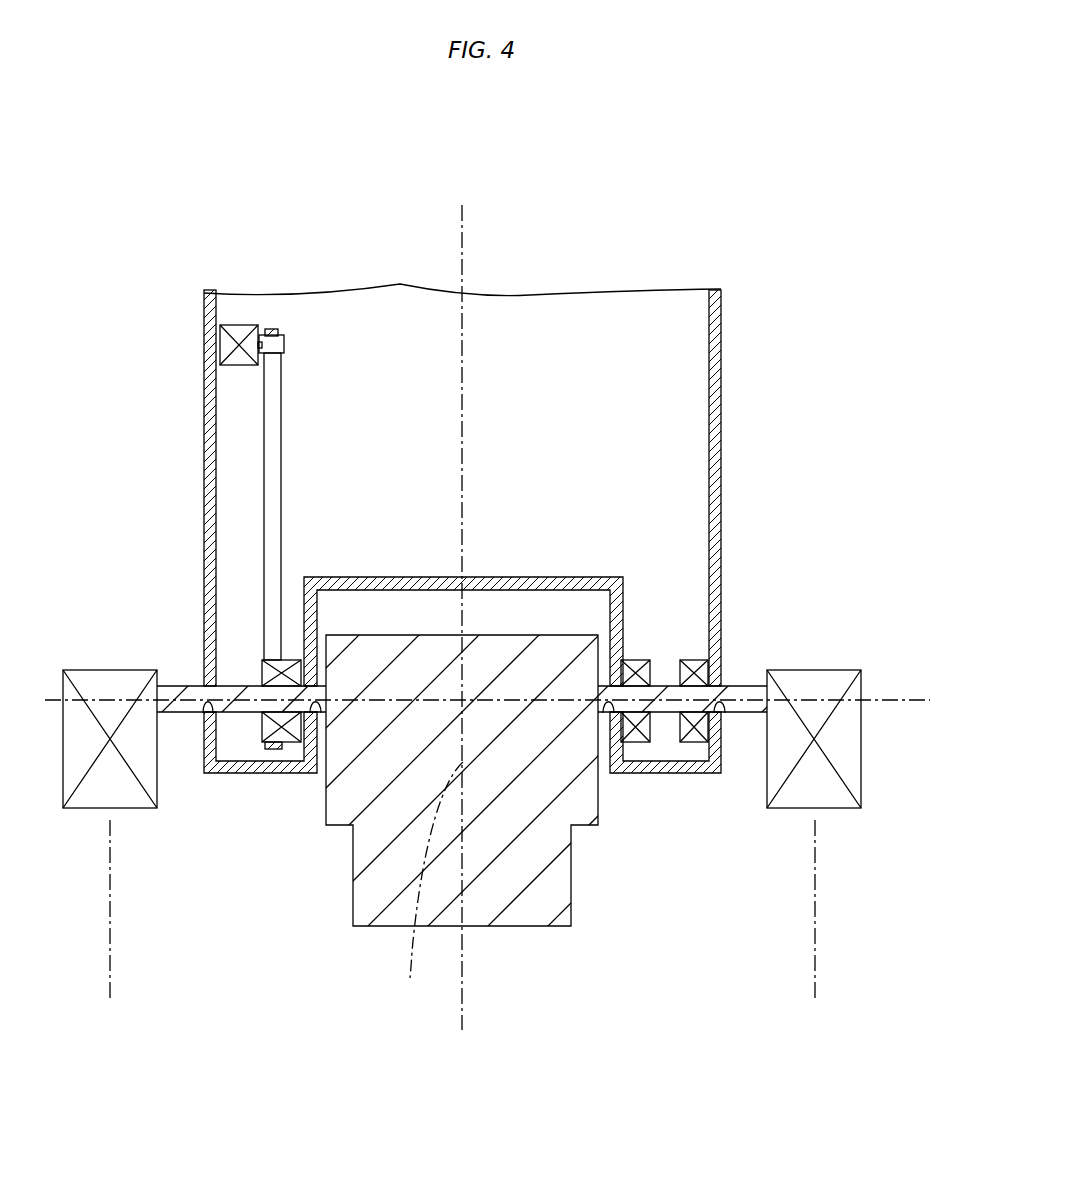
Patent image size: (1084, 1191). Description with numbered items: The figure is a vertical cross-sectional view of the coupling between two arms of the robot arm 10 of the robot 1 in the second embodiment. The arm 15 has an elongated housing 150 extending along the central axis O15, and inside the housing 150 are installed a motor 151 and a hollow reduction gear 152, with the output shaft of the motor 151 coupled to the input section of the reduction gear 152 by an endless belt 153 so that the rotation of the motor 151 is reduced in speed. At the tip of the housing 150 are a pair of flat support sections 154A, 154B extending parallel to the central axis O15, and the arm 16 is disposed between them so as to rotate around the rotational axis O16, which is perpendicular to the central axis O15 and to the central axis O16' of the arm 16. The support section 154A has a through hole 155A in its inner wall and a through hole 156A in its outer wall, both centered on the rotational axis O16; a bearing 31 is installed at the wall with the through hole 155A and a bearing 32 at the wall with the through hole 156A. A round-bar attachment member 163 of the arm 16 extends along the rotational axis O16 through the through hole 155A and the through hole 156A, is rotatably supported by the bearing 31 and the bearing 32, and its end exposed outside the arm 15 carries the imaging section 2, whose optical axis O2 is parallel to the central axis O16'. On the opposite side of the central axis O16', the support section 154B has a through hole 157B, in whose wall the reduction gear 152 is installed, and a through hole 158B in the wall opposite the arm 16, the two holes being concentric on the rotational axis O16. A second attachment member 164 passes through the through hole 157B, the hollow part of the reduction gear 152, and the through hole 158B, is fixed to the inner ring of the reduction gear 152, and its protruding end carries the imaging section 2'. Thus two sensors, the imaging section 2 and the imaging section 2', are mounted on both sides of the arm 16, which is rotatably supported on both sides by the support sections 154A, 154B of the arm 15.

The robot 1 is at (724, 158).
The imaging section 2 is at (825, 707).
The imaging section 2' is at (100, 707).
The robot arm 10 is at (790, 447).
The arm 15 is at (514, 502).
The arm 16 is at (573, 921).
The bearing 31 is at (634, 650).
The bearing 32 is at (698, 648).
The housing 150 is at (724, 350).
The motor 151 is at (242, 330).
The reduction gear 152 is at (250, 665).
The endless belt 153 is at (272, 519).
The support section 154A is at (663, 782).
The support section 154B is at (259, 782).
The through hole 155A is at (607, 716).
The through hole 156A is at (720, 716).
The through hole 157B is at (315, 716).
The through hole 158B is at (208, 716).
The attachment member 163 is at (740, 688).
The attachment member 164 is at (180, 713).
The central axis O15 is at (462, 242).
The rotational axis O16 is at (504, 726).
The central axis O16' is at (430, 885).
The optical axis O2 is at (112, 960).